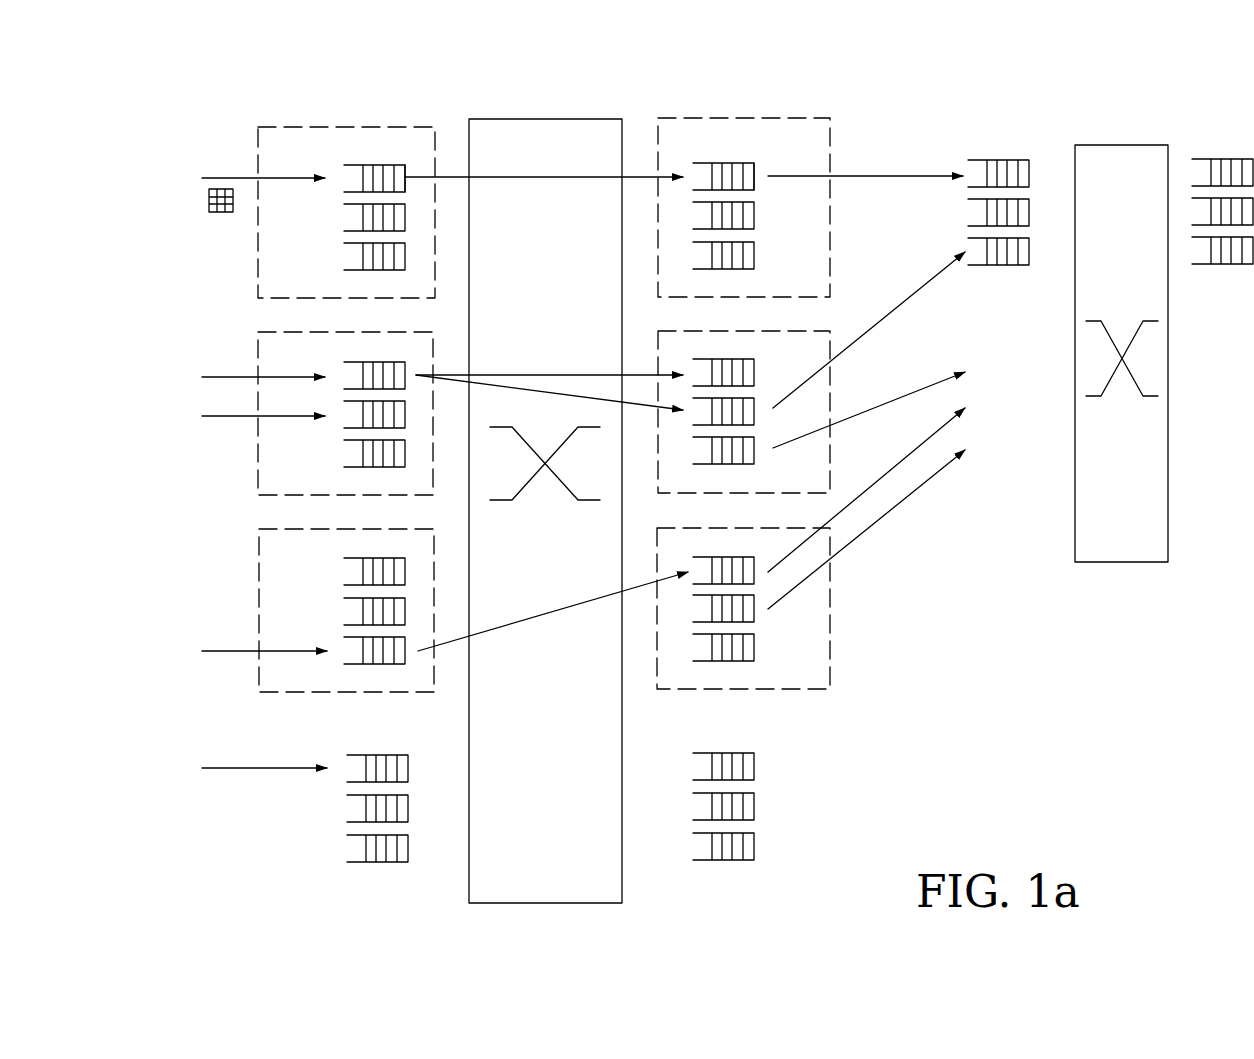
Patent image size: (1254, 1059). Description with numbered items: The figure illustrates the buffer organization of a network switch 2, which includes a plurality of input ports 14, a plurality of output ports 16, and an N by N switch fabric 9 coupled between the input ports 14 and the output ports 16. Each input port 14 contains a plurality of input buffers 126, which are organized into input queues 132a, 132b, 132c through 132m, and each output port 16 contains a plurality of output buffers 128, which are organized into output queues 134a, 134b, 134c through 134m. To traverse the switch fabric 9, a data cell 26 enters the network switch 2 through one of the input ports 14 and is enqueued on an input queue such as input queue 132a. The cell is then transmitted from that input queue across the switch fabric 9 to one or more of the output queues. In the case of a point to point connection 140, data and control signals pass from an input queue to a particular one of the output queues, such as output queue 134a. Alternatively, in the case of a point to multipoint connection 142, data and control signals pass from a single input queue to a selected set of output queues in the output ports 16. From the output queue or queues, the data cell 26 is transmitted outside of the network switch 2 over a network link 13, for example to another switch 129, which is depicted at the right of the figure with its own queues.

The network switch 2 is at (300, 84).
The switch fabric 9 is at (520, 119).
The network link 13 is at (929, 174).
The input port 14 is at (290, 127).
The output port 16 is at (831, 220).
The data cell 26 is at (212, 212).
The input buffer 126 is at (407, 170).
The output buffer 128 is at (754, 168).
The another switch 129 is at (1128, 128).
The input queue 132a is at (404, 162).
The input queue 132b is at (341, 204).
The input queue 132c is at (341, 243).
The input queue 132m is at (344, 835).
The output queue 134a is at (753, 160).
The output queue 134b is at (758, 202).
The output queue 134c is at (758, 242).
The output queue 134m is at (759, 834).
The point to point connection 140 is at (591, 174).
The point to multipoint connection 142 is at (581, 397).